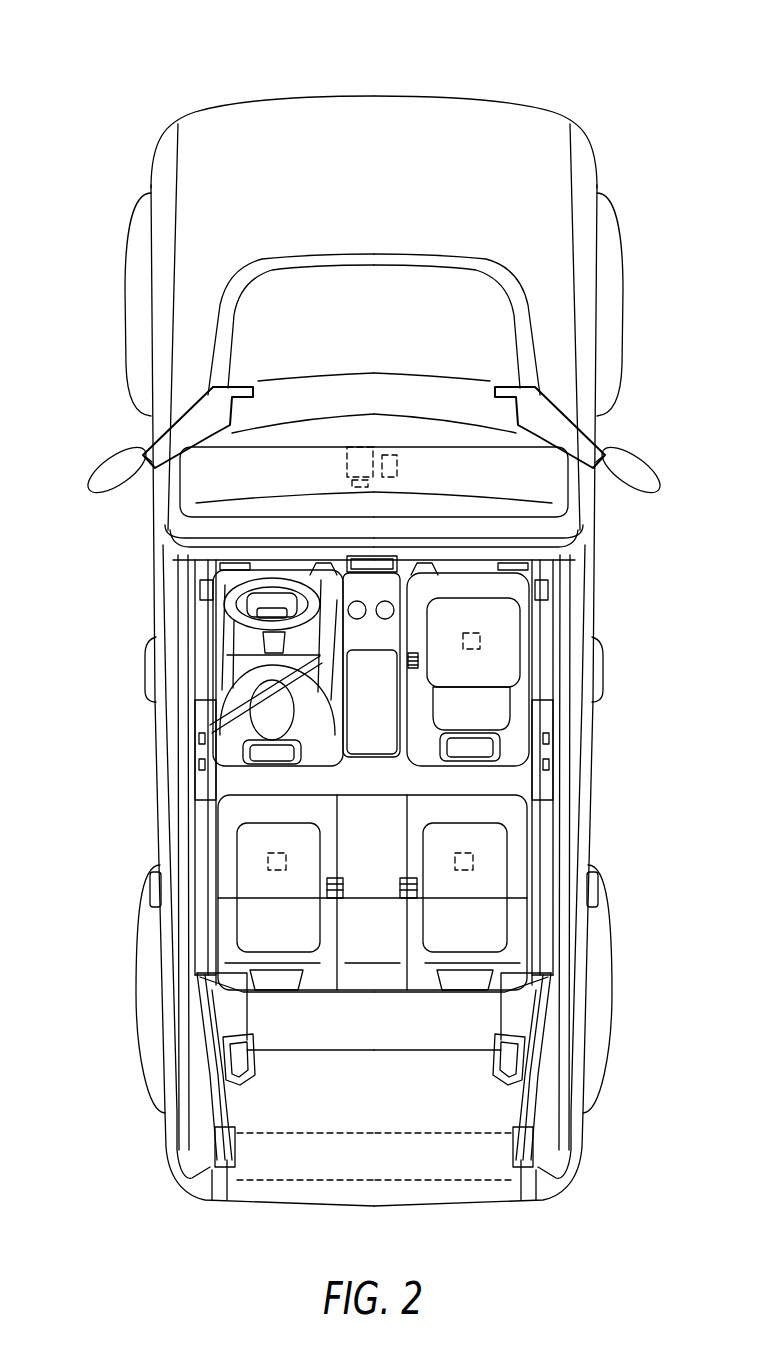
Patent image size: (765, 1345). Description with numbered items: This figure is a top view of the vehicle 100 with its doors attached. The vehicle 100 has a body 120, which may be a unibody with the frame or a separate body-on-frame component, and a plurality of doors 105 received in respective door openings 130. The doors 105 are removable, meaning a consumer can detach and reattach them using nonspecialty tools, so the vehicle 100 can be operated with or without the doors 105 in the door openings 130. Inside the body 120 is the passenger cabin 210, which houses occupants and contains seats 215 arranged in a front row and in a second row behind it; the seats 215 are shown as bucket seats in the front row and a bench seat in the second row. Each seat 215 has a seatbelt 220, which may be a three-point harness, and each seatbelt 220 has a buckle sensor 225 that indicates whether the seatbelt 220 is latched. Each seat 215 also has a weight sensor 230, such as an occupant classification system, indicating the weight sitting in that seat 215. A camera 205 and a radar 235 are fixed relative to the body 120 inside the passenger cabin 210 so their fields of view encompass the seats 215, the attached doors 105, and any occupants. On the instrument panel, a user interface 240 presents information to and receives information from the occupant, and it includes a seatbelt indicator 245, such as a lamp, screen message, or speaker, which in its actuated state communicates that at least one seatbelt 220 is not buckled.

The vehicle 100 is at (558, 46).
The door 105 is at (160, 712).
The body 120 is at (540, 182).
The door opening 130 is at (132, 503).
The camera 205 is at (360, 445).
The passenger cabin 210 is at (510, 783).
The seat 215 is at (226, 590).
The seatbelt 220 is at (243, 700).
The buckle sensor 225 is at (408, 668).
The weight sensor 230 is at (481, 640).
The radar 235 is at (392, 452).
The user interface 240 is at (385, 568).
The seatbelt indicator 245 is at (302, 562).